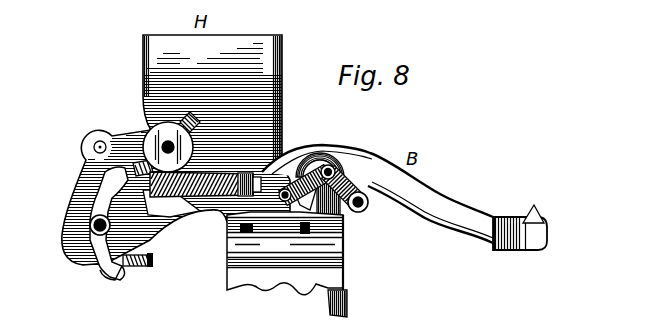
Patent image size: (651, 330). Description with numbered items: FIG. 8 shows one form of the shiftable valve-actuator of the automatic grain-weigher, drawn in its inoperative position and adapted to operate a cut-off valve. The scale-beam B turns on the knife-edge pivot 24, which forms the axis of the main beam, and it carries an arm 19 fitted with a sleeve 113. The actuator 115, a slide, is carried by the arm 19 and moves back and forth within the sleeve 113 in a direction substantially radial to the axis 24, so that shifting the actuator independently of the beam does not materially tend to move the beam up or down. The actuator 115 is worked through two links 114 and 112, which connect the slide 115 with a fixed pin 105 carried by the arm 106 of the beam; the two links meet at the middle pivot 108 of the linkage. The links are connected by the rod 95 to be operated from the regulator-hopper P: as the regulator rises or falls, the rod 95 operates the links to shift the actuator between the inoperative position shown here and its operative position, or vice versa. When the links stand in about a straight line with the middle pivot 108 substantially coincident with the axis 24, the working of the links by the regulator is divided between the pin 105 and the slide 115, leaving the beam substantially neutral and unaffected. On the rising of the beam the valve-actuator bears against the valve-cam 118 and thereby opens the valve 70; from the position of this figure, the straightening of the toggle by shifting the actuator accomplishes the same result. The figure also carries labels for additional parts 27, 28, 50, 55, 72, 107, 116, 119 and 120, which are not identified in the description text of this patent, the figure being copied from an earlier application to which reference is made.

The arm 19 is at (160, 205).
The pivot or knife-edge 24 is at (343, 228).
The lug 27 is at (538, 214).
The lever arm 28 is at (452, 207).
The pivot boss 50 is at (315, 152).
The hammer pivot 55 is at (70, 230).
The valve 70 is at (107, 278).
The hammer 72 is at (117, 247).
The rod 95 is at (348, 301).
The fixed pin 105 is at (368, 210).
The arm of the beam 106 is at (350, 164).
The link pin 107 is at (282, 190).
The middle pivot 108 is at (330, 166).
The link 112 is at (365, 190).
The sleeve 113 is at (203, 187).
The link 114 is at (306, 150).
The actuator 115 is at (268, 220).
The link block 116 is at (124, 172).
The valve-cam 118 is at (118, 182).
The cam disc 119 is at (162, 140).
The frame 120 is at (80, 196).